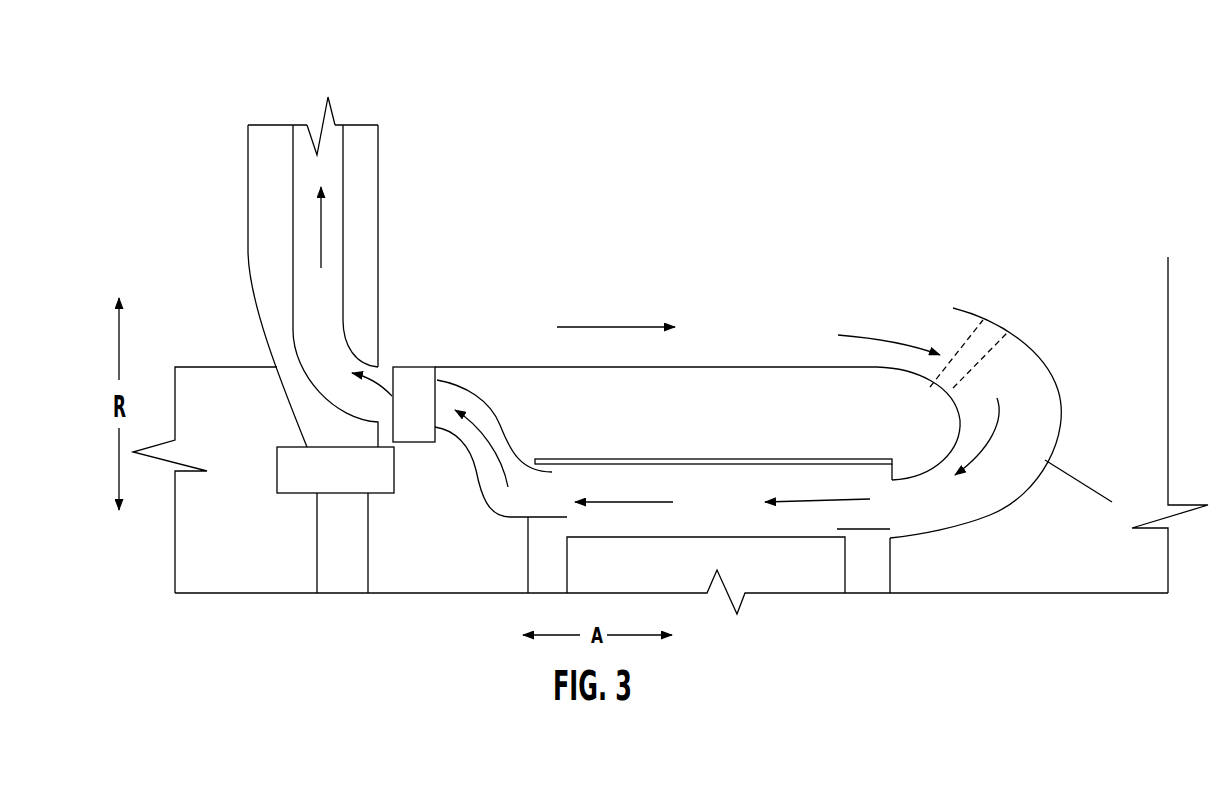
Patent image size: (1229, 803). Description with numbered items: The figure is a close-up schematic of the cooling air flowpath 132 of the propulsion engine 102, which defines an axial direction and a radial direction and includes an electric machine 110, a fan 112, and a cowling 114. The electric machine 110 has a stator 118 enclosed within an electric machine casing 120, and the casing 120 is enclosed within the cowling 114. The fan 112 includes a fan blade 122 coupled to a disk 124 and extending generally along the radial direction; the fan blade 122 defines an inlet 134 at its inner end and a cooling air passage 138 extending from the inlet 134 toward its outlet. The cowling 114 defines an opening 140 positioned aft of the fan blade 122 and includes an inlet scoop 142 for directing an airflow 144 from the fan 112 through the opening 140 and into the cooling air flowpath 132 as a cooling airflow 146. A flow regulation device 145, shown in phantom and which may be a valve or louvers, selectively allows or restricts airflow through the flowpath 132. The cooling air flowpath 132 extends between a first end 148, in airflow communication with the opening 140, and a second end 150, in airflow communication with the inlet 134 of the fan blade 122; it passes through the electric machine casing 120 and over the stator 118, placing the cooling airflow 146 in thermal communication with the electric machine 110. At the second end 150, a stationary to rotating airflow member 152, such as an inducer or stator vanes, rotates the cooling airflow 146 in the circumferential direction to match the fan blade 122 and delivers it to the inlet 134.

The propulsion engine 102 is at (830, 193).
The electric machine 110 is at (913, 573).
The fan 112 is at (298, 241).
The cowling 114 is at (735, 367).
The stator 118 is at (797, 592).
The electric machine casing 120 is at (690, 459).
The fan blade 122 is at (248, 167).
The disk 124 is at (277, 470).
The cooling air flowpath 132 is at (512, 436).
The inlet 134 is at (380, 376).
The cooling air passage 138 is at (343, 197).
The opening 140 is at (1033, 423).
The inlet scoop 142 is at (1030, 343).
The airflow 144 is at (623, 327).
The flow regulation device 145 is at (965, 343).
The cooling airflow 146 is at (317, 237).
The first end 148 is at (1010, 470).
The second end 150 is at (453, 385).
The stationary to rotating airflow member 152 is at (417, 373).